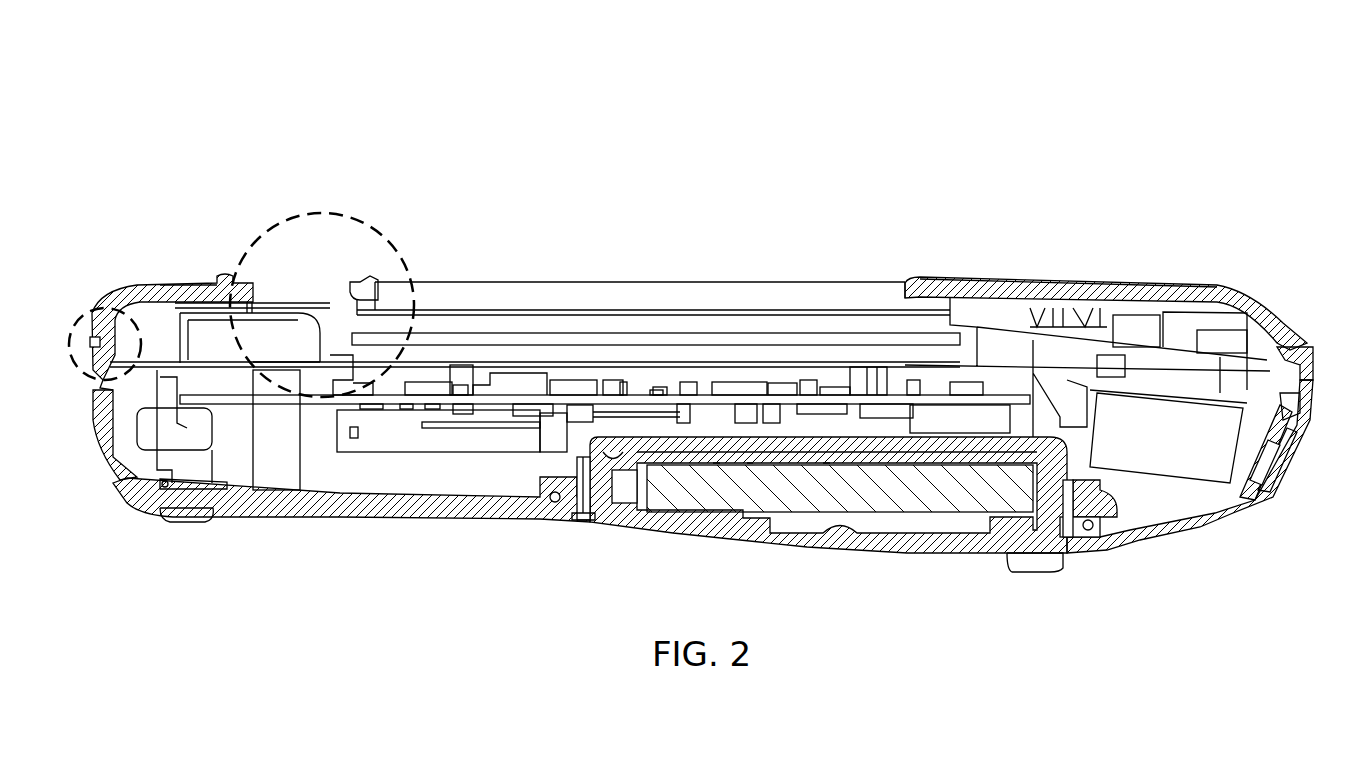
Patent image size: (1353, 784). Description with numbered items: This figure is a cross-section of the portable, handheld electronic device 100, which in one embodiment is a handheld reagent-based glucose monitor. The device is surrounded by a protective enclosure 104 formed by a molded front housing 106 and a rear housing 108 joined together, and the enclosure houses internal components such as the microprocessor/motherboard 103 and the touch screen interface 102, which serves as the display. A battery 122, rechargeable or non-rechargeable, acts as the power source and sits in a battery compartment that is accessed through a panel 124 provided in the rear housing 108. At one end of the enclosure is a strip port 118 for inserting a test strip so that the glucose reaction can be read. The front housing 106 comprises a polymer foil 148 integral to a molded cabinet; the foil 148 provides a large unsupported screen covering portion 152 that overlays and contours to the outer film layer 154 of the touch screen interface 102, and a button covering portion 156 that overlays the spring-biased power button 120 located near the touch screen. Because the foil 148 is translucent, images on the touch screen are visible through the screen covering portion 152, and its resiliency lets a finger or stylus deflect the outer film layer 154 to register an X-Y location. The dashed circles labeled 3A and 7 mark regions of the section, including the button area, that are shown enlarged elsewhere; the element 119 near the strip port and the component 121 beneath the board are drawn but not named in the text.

The portable, handheld electronic device 100 is at (196, 152).
The touch screen interface 102 is at (792, 325).
The microprocessor/motherboard 103 is at (1017, 395).
The protective enclosure 104 is at (1172, 275).
The front housing 106 is at (152, 283).
The rear housing 108 is at (127, 500).
The strip port 118 is at (1307, 343).
The support strut 119 is at (1273, 467).
The power button 120 is at (252, 283).
The speaker module 121 is at (1202, 451).
The battery 122 is at (908, 522).
The panel 124 is at (976, 552).
The polymer foil 148 is at (952, 280).
The screen covering portion 152 is at (898, 268).
The outer film layer 154 is at (388, 282).
The button covering portion 156 is at (348, 270).
The detail region of FIG. 3A is at (92, 297).
The detail region of FIG. 7 is at (343, 216).